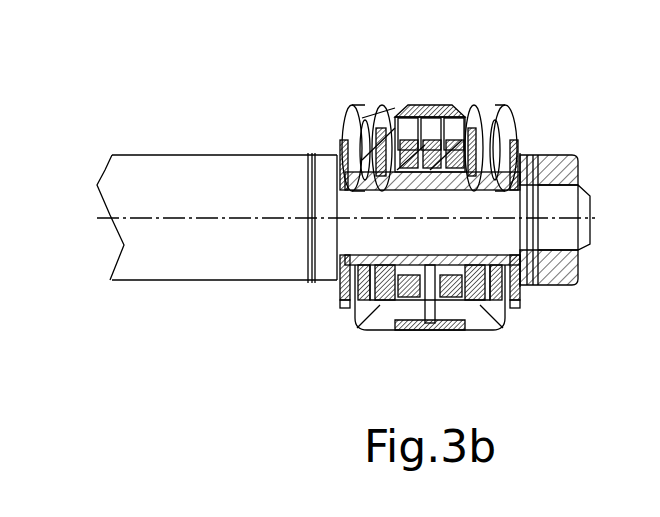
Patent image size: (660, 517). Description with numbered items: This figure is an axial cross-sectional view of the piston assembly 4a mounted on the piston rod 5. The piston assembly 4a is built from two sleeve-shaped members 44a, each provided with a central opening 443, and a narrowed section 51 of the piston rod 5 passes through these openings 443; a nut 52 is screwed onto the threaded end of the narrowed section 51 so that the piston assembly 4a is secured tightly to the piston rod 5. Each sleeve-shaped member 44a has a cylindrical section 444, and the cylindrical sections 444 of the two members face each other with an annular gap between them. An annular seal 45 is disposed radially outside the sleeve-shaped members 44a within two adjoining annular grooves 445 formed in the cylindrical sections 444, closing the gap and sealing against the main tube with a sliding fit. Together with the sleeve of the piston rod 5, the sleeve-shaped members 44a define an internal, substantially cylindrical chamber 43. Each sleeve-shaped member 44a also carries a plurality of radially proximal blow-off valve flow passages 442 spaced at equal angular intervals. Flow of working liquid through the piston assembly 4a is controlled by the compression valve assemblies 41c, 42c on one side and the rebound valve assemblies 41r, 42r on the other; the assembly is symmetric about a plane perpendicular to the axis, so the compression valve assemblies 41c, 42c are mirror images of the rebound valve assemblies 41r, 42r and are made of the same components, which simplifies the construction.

The piston rod 5 is at (143, 163).
The piston assembly 4a is at (328, 122).
The compression valve assembly 41c is at (350, 104).
The rebound valve assembly 42r is at (381, 104).
The internal cylindrical chamber 43 is at (420, 104).
The annular seal 45 is at (440, 105).
The compression valve assembly 42c is at (472, 105).
The rebound valve assembly 41r is at (506, 105).
The nut 52 is at (560, 160).
The narrowed section 51 is at (557, 198).
The central opening 443 is at (330, 270).
The blow-off valve flow passage 442 is at (362, 300).
The sleeve-shaped member 44a is at (378, 306).
The cylindrical section 444 is at (395, 306).
The annular groove 445 is at (433, 332).